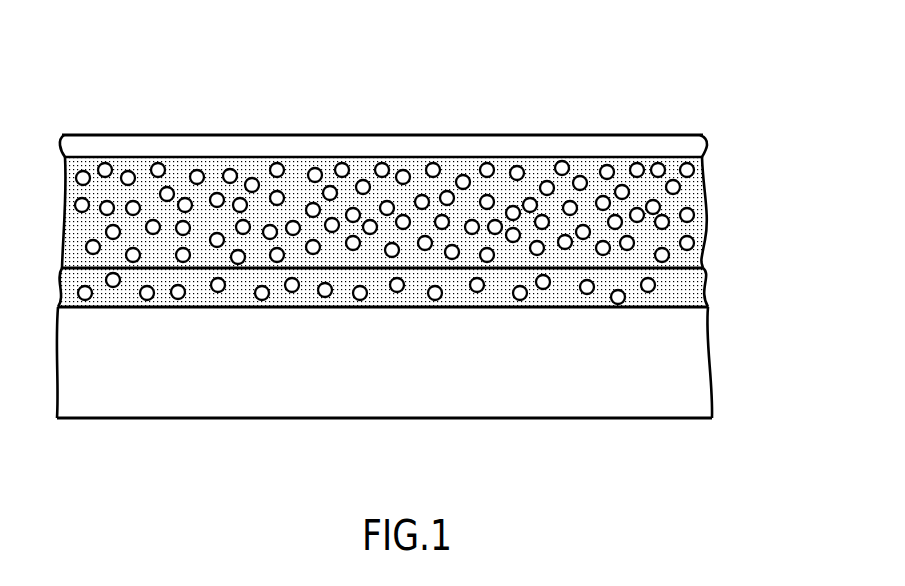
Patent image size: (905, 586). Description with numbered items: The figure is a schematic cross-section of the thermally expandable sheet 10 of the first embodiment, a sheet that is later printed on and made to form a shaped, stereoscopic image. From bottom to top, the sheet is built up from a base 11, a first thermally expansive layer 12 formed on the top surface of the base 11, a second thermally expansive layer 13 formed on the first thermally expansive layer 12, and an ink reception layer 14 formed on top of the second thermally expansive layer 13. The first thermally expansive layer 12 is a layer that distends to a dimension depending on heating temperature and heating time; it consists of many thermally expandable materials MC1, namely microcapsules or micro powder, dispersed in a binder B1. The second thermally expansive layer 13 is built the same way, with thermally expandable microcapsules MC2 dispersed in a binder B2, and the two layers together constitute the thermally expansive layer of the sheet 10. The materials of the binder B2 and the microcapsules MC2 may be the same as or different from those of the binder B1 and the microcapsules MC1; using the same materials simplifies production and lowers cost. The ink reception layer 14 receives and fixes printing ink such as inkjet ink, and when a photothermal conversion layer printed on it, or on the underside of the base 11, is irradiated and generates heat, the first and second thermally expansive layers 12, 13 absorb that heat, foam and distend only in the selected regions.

The thermally expandable sheet 10 is at (601, 61).
The base 11 is at (688, 374).
The first thermally expansive layer 12 is at (688, 290).
The second thermally expansive layer 13 is at (703, 216).
The ink reception layer 14 is at (677, 148).
The thermally expandable materials MC1 is at (180, 292).
The binder B1 is at (307, 297).
The thermally expandable material MC2 is at (403, 177).
The binder B2 is at (453, 168).